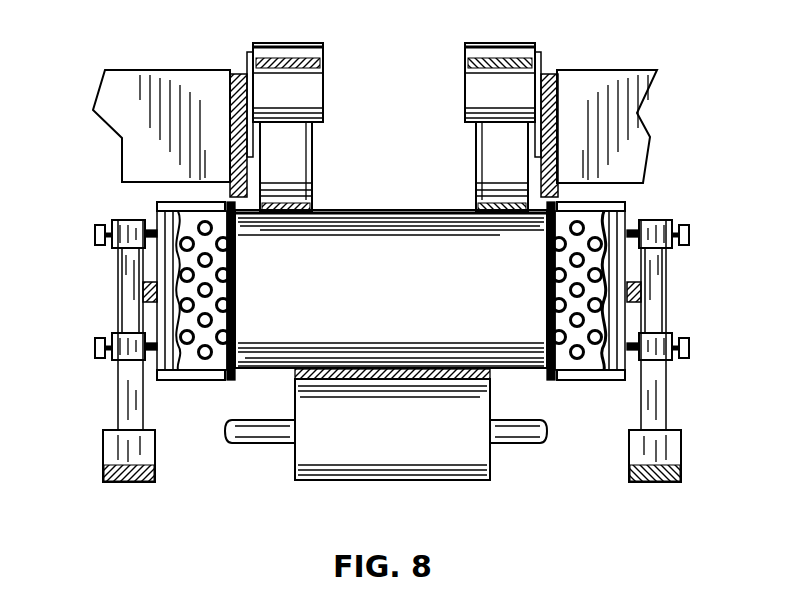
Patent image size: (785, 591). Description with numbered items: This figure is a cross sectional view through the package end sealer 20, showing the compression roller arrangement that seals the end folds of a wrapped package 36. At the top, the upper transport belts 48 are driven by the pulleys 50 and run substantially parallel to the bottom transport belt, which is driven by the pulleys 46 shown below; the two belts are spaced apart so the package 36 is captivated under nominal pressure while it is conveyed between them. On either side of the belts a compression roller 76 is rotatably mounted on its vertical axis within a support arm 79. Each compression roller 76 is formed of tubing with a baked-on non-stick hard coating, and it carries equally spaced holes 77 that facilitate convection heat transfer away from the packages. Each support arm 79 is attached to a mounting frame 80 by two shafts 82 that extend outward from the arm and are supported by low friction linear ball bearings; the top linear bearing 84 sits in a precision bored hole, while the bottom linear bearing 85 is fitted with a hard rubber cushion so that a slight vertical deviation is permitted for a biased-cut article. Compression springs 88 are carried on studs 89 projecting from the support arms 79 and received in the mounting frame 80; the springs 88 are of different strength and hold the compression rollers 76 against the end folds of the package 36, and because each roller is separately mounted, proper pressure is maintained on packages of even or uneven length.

The package end sealer 20 is at (167, 53).
The package 36 is at (257, 377).
The pulleys 46 is at (290, 462).
The upper transport belts 48 is at (472, 153).
The pulleys 50 is at (497, 43).
The compression rollers 76 is at (182, 273).
The holes 77 is at (585, 370).
The support arms 79 is at (190, 200).
The mounting frame 80 is at (127, 337).
The shafts 82 is at (153, 230).
The top linear bearing 84 is at (672, 223).
The bottom linear bearing 85 is at (670, 368).
The compression springs 88 is at (147, 305).
The studs 89 is at (153, 283).